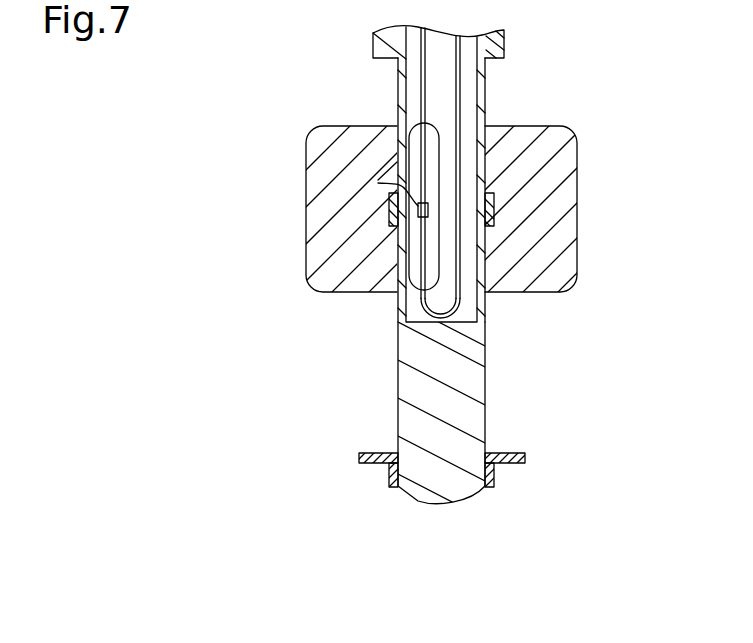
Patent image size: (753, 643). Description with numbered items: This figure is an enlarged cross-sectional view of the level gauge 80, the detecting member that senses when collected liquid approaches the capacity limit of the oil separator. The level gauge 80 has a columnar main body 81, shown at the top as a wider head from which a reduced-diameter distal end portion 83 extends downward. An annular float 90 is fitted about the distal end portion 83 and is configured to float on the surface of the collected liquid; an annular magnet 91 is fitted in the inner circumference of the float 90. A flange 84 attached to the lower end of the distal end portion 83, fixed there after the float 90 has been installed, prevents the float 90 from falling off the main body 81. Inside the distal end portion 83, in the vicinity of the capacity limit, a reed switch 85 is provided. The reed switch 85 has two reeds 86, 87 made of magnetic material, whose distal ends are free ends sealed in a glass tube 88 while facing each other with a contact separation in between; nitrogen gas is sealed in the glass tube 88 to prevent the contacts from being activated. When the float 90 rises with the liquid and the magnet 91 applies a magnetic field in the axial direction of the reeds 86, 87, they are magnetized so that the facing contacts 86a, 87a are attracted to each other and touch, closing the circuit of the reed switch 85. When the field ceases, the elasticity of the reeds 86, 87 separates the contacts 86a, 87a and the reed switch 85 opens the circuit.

The level gauge 80 is at (594, 402).
The main body 81 is at (504, 44).
The distal end portion 83 is at (486, 382).
The flange 84 is at (497, 478).
The reed switch 85 is at (434, 115).
The reed 86 is at (404, 73).
The contact 86a is at (372, 184).
The reed 87 is at (418, 308).
The contact 87a is at (428, 212).
The glass tube 88 is at (414, 125).
The float 90 is at (578, 201).
The magnet 91 is at (494, 206).